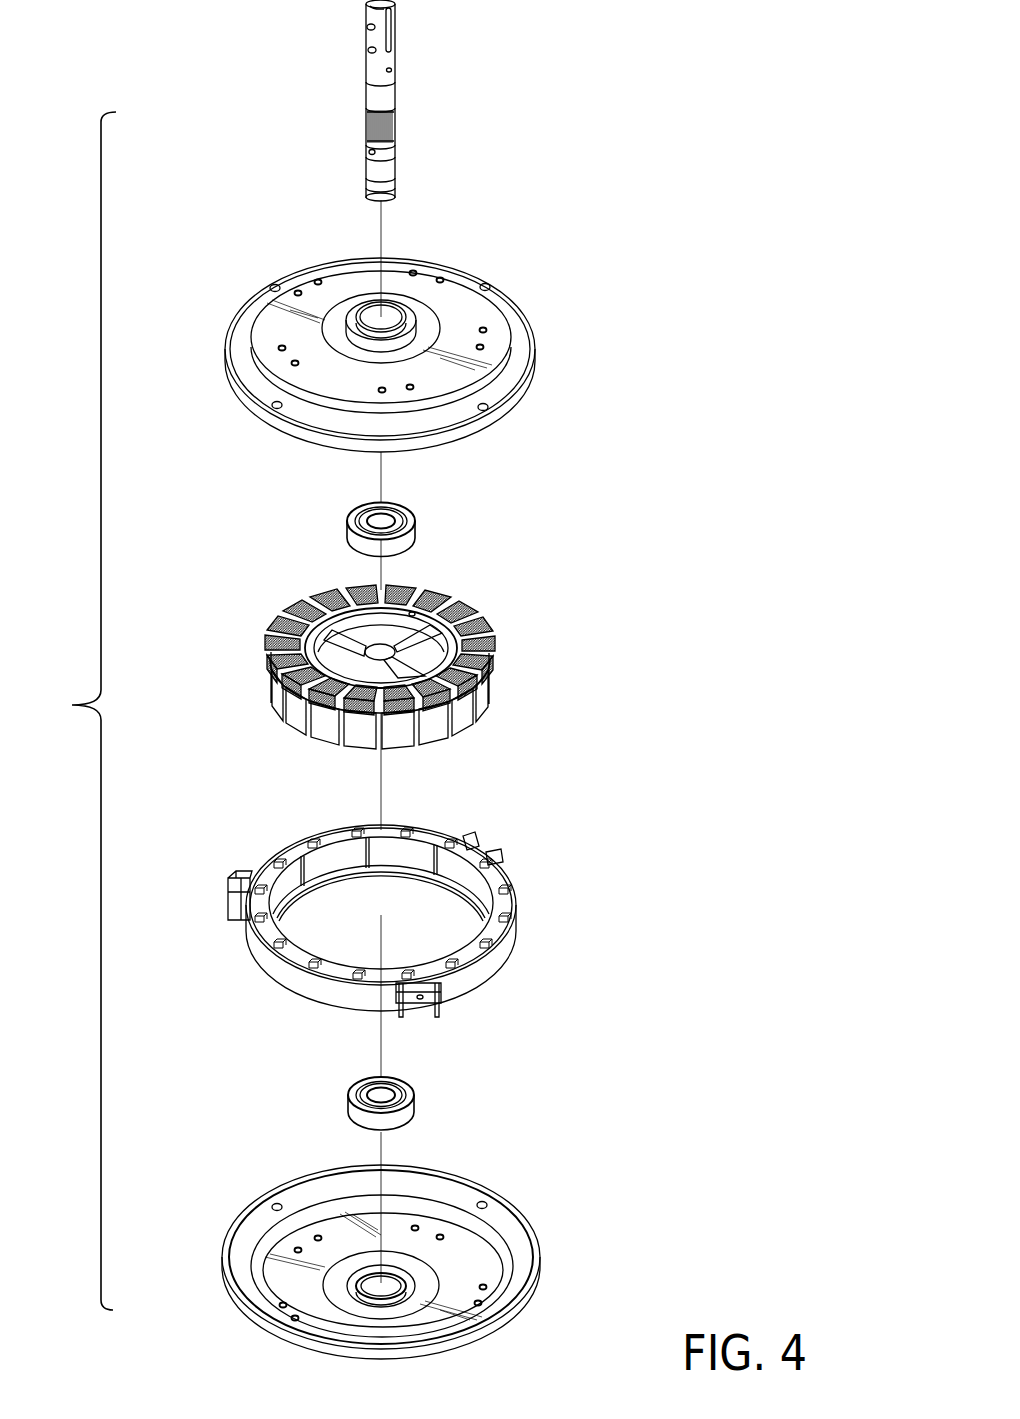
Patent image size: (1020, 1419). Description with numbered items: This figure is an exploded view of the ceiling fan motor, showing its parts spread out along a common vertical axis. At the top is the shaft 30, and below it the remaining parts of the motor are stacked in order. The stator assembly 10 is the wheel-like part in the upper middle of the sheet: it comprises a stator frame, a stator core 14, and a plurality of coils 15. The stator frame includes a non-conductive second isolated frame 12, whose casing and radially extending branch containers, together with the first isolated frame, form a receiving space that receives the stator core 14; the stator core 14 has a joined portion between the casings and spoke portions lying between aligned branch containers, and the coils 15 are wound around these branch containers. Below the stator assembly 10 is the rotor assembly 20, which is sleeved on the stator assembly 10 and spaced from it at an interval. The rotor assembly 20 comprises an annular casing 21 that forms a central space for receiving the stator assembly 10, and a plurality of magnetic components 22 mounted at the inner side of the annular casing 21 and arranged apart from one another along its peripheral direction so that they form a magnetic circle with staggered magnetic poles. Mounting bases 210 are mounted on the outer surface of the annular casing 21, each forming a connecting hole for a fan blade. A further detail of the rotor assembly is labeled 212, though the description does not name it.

The stator assembly 10 is at (352, 655).
The second isolated frame 12 is at (437, 653).
The stator core 14 is at (473, 707).
The coils 15 is at (481, 651).
The rotor assembly 20 is at (374, 901).
The annular casing 21 is at (506, 968).
The magnetic components 22 is at (467, 877).
The mounting bases 210 is at (425, 1005).
The support post 212 is at (308, 863).
The shaft 30 is at (391, 95).